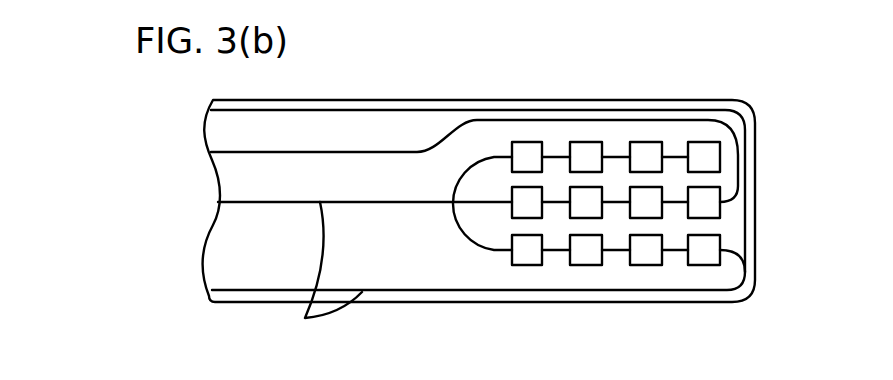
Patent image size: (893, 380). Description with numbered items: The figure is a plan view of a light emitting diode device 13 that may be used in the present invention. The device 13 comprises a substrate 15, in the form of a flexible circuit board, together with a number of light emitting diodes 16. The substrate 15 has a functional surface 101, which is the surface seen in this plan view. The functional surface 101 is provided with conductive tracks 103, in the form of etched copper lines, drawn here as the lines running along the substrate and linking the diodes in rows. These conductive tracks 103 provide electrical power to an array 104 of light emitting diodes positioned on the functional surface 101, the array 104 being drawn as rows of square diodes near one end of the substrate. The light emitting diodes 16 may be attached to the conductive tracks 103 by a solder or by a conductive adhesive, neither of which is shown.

The light emitting diode device 13 is at (137, 212).
The substrate 15 is at (393, 133).
The light emitting diodes 16 is at (704, 160).
The functional surface 101 is at (245, 262).
The conductive tracks 103 is at (313, 284).
The array 104 is at (482, 266).